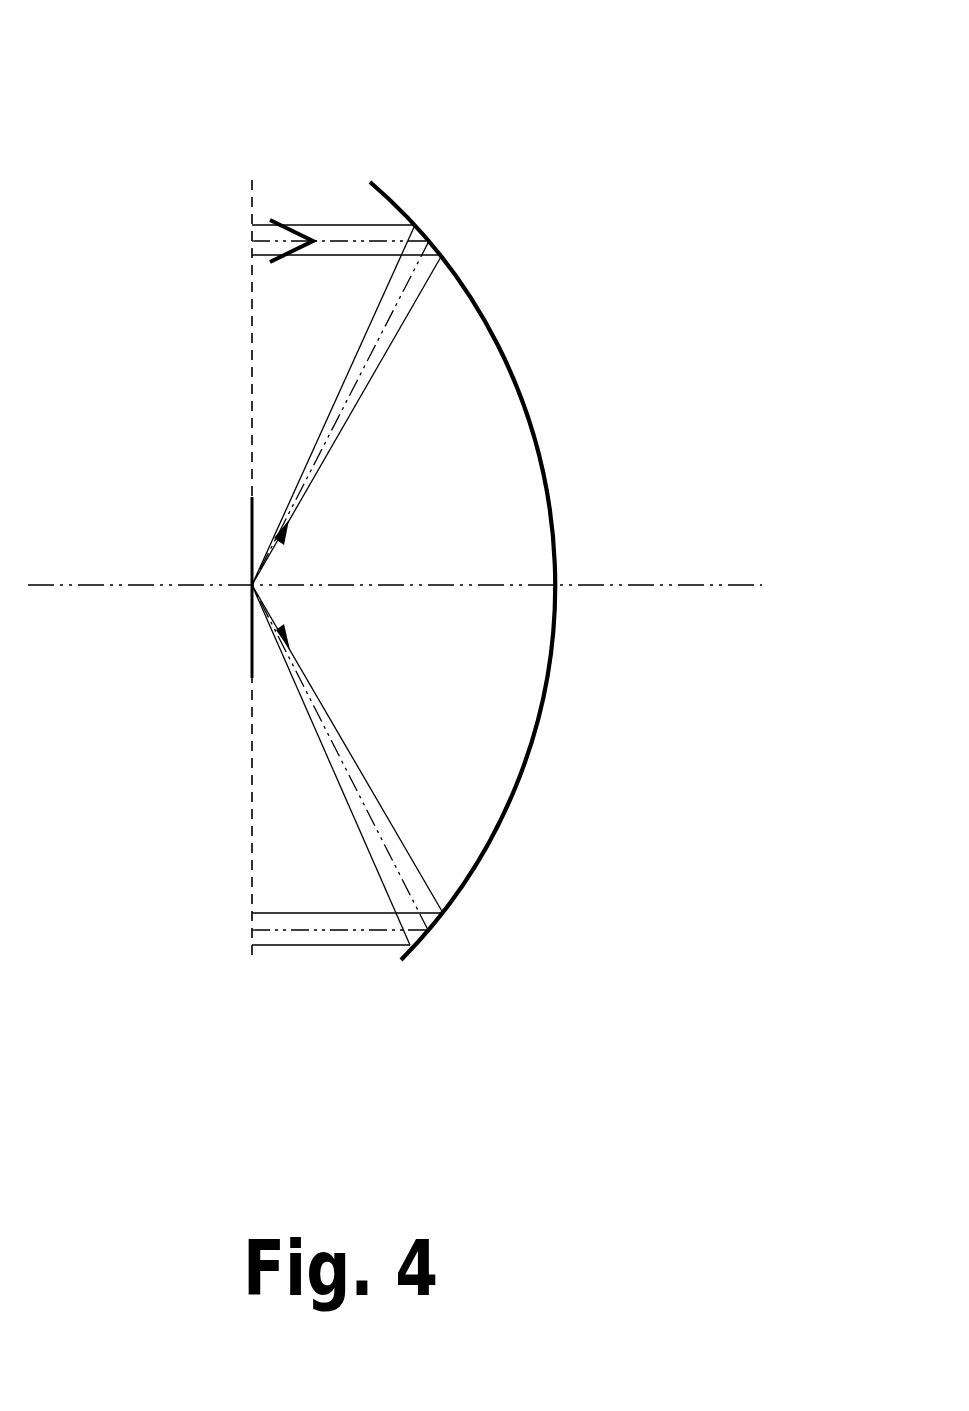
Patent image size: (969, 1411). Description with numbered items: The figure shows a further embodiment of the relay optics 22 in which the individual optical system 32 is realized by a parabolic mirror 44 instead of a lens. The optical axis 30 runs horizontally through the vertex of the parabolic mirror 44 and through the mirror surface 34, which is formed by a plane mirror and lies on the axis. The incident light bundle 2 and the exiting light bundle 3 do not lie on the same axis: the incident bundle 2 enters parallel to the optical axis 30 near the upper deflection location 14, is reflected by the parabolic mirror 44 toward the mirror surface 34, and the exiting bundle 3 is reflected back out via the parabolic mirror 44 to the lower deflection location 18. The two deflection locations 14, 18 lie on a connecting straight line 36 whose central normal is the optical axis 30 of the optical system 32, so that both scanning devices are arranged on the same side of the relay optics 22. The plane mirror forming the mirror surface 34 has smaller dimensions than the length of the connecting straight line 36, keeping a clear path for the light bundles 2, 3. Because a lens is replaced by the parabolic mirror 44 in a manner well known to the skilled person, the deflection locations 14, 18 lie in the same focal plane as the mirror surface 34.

The incident light bundle 2 is at (342, 232).
The exiting light bundle 3 is at (285, 930).
The deflection location 14 is at (252, 238).
The deflection location 18 is at (252, 928).
The relay optics 22 is at (562, 125).
The optical axis 30 is at (188, 585).
The individual optical system 32 is at (558, 288).
The mirror surface 34 is at (245, 648).
The connecting straight line 36 is at (252, 475).
The parabolic mirror 44 is at (522, 397).